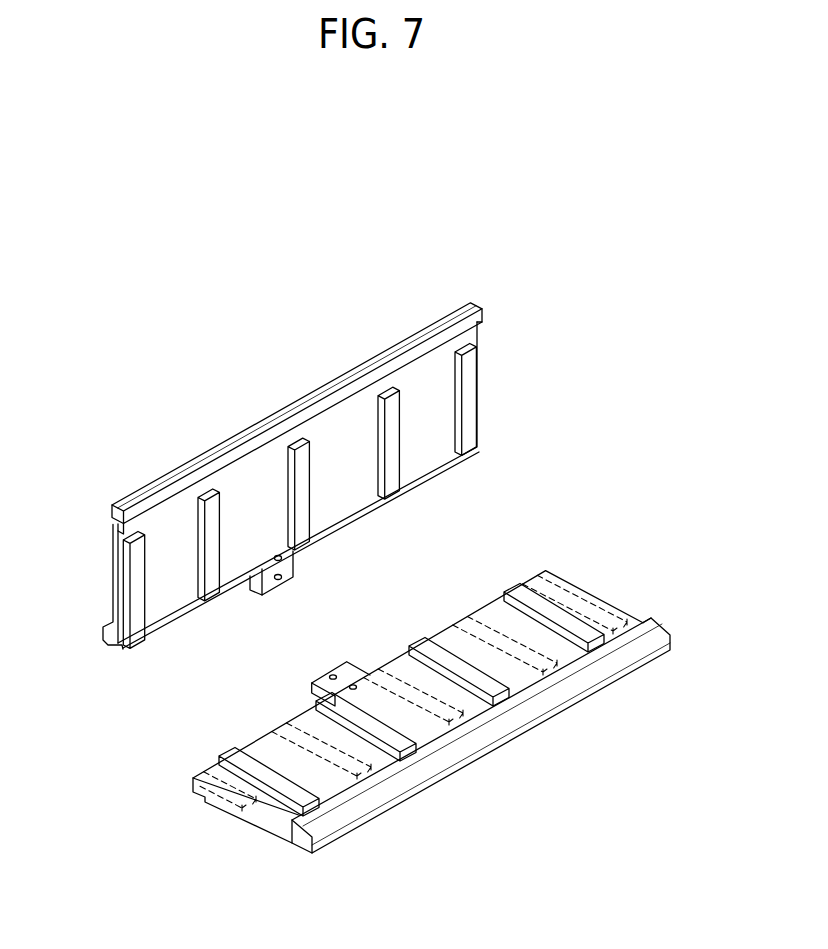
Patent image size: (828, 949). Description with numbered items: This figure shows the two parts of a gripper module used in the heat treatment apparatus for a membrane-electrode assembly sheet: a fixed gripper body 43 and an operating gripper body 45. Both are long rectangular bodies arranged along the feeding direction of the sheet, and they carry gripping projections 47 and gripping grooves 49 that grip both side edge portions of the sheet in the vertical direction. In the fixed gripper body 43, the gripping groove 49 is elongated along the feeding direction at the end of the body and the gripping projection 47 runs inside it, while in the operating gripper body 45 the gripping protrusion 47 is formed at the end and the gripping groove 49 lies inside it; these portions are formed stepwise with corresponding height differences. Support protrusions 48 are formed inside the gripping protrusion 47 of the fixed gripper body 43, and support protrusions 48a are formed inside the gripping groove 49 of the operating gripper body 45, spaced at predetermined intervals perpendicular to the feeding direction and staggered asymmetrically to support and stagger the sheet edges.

The fixed gripper body 43 is at (615, 592).
The operating gripper body 45 is at (494, 376).
The gripping projection 47 is at (122, 519).
The support protrusion 48 is at (460, 668).
The support protrusion 48a is at (217, 520).
The gripping groove 49 is at (119, 532).